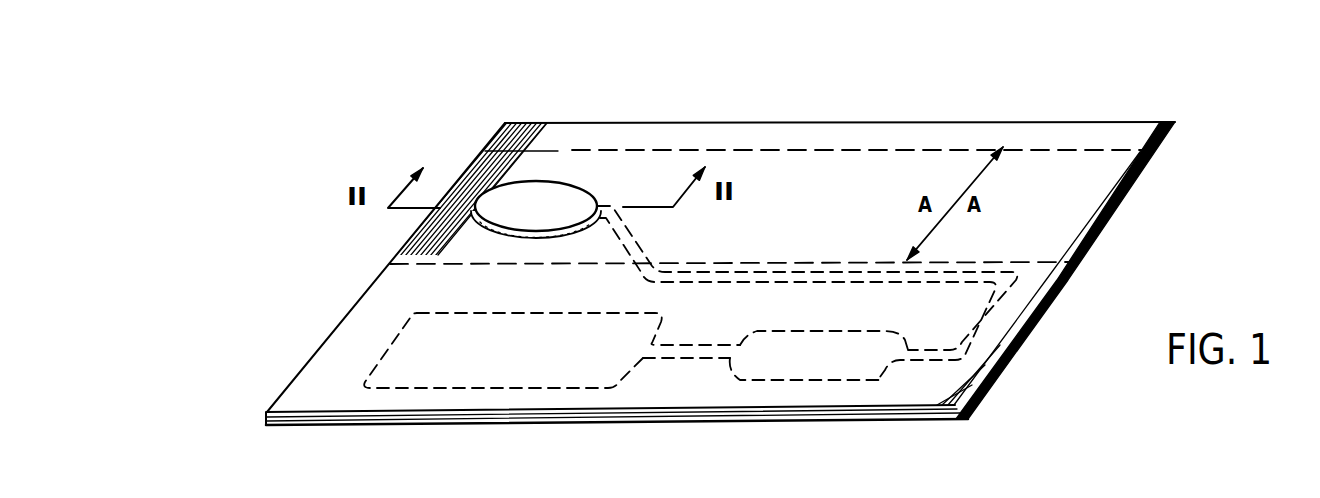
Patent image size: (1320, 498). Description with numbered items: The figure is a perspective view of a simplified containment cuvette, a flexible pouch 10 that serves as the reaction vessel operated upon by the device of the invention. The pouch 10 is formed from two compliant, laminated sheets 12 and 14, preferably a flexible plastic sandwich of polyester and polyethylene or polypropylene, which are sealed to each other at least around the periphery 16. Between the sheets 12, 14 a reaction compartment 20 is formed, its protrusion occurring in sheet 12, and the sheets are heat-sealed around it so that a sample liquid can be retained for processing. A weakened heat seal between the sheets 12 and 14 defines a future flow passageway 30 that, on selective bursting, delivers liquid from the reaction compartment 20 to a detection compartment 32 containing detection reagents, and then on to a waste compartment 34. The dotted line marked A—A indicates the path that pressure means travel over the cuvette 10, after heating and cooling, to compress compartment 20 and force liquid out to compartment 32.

The flexible pouch 10 is at (823, 115).
The laminated sheet 12 is at (290, 413).
The laminated sheet 14 is at (311, 427).
The periphery 16 is at (1146, 150).
The reaction compartment 20 is at (543, 181).
The flow passageway 30 is at (677, 282).
The detection compartment 32 is at (813, 366).
The waste compartment 34 is at (510, 362).